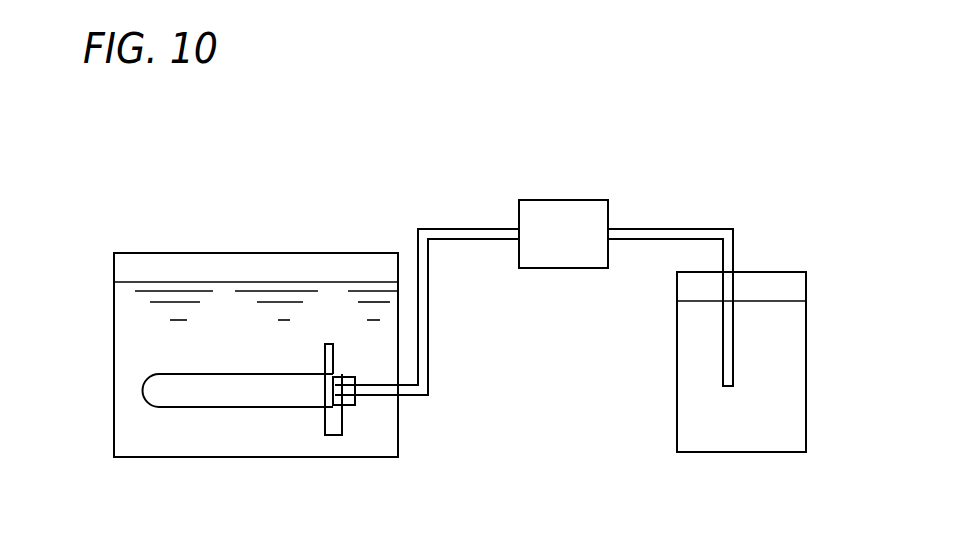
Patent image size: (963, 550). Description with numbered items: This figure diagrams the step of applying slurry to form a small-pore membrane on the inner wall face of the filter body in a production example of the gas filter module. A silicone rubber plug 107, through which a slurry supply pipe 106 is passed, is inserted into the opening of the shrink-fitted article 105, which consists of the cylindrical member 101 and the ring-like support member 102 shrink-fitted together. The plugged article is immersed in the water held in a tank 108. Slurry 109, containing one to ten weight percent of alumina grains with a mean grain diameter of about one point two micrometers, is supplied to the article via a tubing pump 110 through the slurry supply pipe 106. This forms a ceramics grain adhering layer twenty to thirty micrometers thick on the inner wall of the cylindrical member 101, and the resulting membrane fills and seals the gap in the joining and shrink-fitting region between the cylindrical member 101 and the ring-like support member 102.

The cylindrical member 101 is at (275, 373).
The ring-like support member 102 is at (330, 362).
The shrink-fitted article 105 is at (208, 409).
The slurry supply pipe 106 is at (415, 387).
The silicone rubber plug 107 is at (347, 407).
The tank 108 is at (115, 412).
The slurry 109 is at (787, 398).
The tubing pump 110 is at (572, 219).